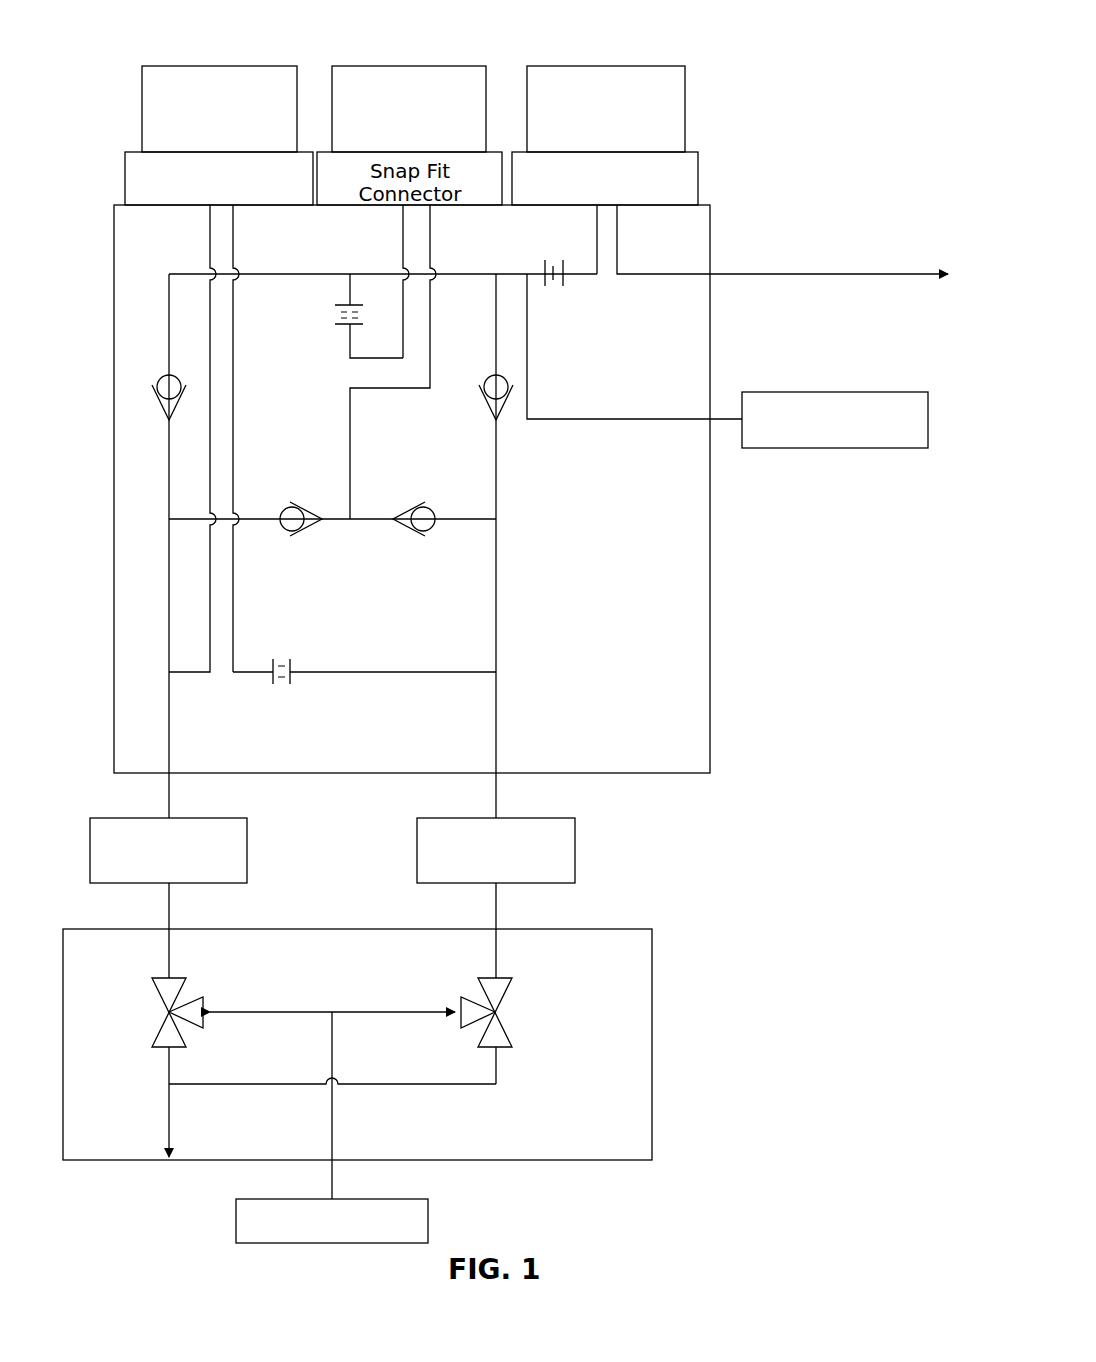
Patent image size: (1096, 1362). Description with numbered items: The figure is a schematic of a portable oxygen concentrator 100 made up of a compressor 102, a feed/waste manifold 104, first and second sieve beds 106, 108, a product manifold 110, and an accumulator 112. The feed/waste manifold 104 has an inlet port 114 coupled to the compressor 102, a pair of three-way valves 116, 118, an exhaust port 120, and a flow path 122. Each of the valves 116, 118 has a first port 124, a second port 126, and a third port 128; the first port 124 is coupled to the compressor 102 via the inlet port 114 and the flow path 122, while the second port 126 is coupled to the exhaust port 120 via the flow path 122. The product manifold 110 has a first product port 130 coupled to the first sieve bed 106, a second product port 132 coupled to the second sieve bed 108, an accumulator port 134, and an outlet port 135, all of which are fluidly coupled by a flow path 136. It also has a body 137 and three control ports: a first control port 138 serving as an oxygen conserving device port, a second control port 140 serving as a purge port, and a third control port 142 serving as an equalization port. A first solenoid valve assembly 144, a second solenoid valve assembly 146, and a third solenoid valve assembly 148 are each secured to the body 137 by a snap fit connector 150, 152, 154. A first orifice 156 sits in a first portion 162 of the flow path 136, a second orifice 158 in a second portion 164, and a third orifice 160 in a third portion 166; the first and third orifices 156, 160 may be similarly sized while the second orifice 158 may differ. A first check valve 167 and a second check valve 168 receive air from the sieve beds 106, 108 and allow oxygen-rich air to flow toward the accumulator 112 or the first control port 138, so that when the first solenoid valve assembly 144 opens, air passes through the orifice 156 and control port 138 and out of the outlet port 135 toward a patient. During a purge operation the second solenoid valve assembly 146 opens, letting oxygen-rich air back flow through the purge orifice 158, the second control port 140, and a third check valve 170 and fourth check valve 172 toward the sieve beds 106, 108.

The portable oxygen concentrator 100 is at (826, 40).
The compressor 102 is at (304, 1198).
The feed/waste manifold 104 is at (130, 928).
The first sieve bed 106 is at (178, 818).
The second sieve bed 108 is at (505, 818).
The product manifold 110 is at (113, 305).
The accumulator 112 is at (802, 392).
The inlet port 114 is at (330, 1157).
The three-way valve 116 is at (180, 992).
The three-way valve 118 is at (507, 992).
The exhaust port 120 is at (163, 1158).
The flow path 122 is at (245, 1086).
The first port 124 is at (205, 1028).
The second port 126 is at (163, 1050).
The third port 128 is at (166, 977).
The first product port 130 is at (165, 775).
The second product port 132 is at (490, 775).
The accumulator port 134 is at (708, 421).
The outlet port 135 is at (712, 272).
The flow path 136 is at (493, 603).
The body 137 is at (135, 487).
The first control port 138 is at (592, 212).
The second control port 140 is at (400, 213).
The third control port 142 is at (208, 213).
The first solenoid valve assembly 144 is at (595, 65).
The second solenoid valve assembly 146 is at (398, 65).
The third solenoid valve assembly 148 is at (208, 65).
The snap fit connector 150 is at (702, 176).
The snap fit connector 152 is at (436, 210).
The snap fit connector 154 is at (124, 178).
The first orifice 156 is at (542, 270).
The second orifice 158 is at (347, 333).
The third orifice 160 is at (270, 680).
The first portion 162 is at (565, 286).
The second portion 164 is at (346, 348).
The third portion 166 is at (313, 676).
The first check valve 167 is at (156, 381).
The second check valve 168 is at (508, 393).
The third check valve 170 is at (305, 535).
The fourth check valve 172 is at (412, 535).